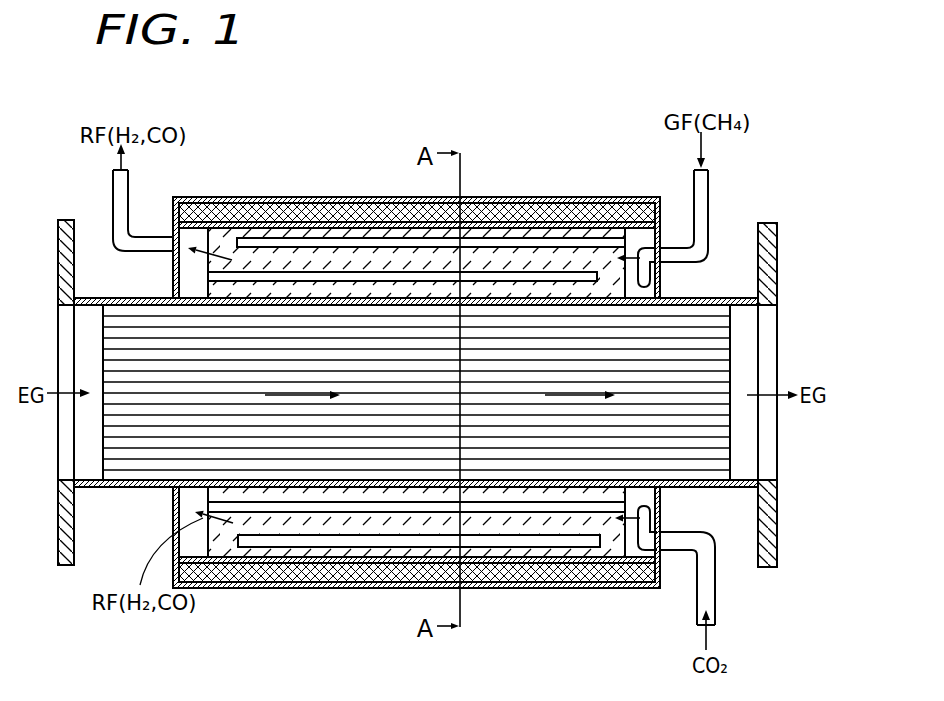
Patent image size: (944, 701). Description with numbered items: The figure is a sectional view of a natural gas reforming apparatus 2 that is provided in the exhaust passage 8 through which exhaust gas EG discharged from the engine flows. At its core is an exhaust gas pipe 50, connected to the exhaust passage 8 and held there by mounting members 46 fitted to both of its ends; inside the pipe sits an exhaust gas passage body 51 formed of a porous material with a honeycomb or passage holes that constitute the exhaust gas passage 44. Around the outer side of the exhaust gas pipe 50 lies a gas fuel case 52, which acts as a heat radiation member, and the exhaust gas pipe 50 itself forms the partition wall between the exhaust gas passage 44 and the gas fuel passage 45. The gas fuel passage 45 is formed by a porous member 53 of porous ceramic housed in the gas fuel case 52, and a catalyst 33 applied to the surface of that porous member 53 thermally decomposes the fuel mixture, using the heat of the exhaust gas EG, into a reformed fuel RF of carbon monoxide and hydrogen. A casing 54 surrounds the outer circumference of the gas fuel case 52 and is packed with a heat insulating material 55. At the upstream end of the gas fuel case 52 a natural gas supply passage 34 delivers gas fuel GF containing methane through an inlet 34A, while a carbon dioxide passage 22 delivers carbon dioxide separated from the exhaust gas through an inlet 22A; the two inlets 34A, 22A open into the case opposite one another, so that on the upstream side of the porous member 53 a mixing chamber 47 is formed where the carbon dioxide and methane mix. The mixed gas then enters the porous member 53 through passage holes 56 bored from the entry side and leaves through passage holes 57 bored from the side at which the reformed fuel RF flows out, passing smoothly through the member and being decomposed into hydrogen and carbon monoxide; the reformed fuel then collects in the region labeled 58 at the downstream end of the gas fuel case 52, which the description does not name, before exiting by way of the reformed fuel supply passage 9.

The natural gas reforming apparatus 2 is at (584, 194).
The exhaust passage 8 is at (70, 430).
The reformed fuel supply passage 9 is at (122, 203).
The CO2 passage 22 is at (708, 593).
The inlet 22A is at (657, 523).
The catalyst 33 is at (352, 260).
The natural gas supply passage 34 is at (703, 187).
The inlet 34A is at (658, 288).
The exhaust gas passage 44 is at (492, 375).
The gas fuel passage 45 is at (385, 262).
The mounting members 46 is at (65, 243).
The mixing chamber 47 is at (642, 233).
The exhaust gas pipe 50 is at (122, 490).
The exhaust gas passage body 51 is at (200, 405).
The gas fuel case 52 is at (488, 212).
The porous member 53 is at (588, 263).
The casing 54 is at (617, 589).
The heat insulating material 55 is at (324, 228).
The passage holes 56 is at (554, 250).
The passage holes 57 is at (283, 280).
The gas collecting chamber 58 is at (251, 224).